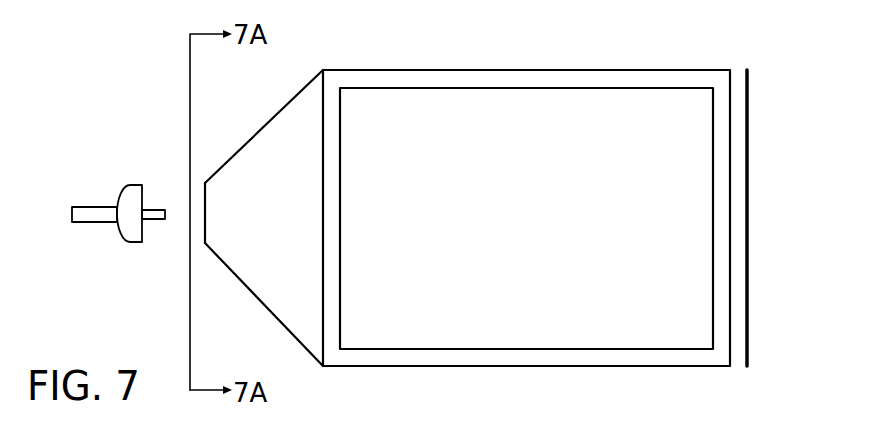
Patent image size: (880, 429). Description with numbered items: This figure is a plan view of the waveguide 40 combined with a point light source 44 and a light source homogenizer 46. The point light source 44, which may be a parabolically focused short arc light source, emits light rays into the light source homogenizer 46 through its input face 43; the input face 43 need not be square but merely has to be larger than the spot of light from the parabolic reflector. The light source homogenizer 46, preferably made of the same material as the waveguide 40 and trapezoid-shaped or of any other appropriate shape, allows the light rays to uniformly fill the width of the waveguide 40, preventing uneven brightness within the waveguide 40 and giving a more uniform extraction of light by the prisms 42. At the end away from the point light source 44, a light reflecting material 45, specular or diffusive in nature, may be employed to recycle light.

The waveguide 40 is at (638, 70).
The prisms 42 is at (552, 97).
The input face 43 is at (204, 230).
The point light source 44 is at (130, 243).
The light reflecting material 45 is at (749, 334).
The light source homogenizer 46 is at (277, 113).